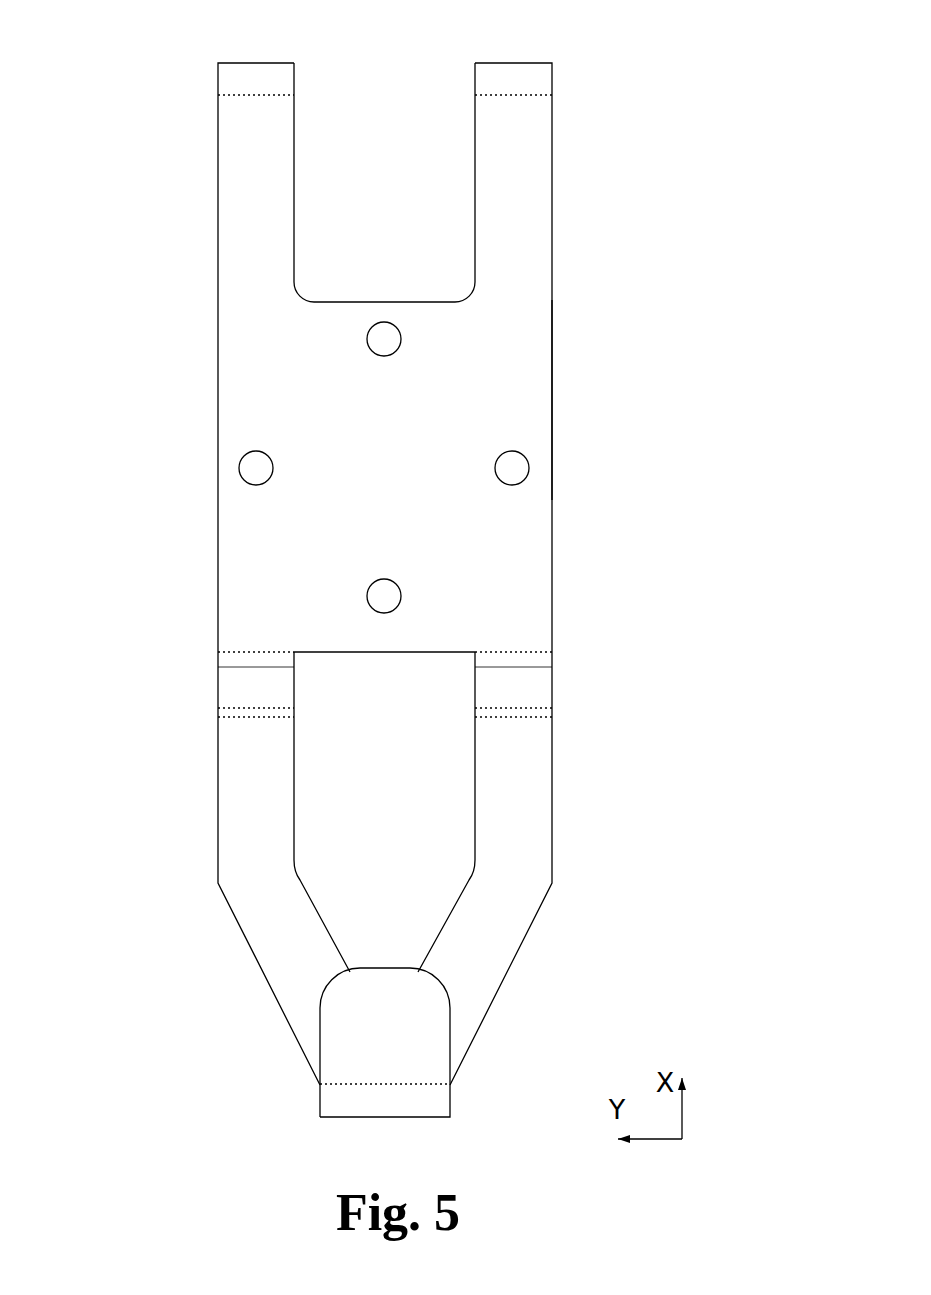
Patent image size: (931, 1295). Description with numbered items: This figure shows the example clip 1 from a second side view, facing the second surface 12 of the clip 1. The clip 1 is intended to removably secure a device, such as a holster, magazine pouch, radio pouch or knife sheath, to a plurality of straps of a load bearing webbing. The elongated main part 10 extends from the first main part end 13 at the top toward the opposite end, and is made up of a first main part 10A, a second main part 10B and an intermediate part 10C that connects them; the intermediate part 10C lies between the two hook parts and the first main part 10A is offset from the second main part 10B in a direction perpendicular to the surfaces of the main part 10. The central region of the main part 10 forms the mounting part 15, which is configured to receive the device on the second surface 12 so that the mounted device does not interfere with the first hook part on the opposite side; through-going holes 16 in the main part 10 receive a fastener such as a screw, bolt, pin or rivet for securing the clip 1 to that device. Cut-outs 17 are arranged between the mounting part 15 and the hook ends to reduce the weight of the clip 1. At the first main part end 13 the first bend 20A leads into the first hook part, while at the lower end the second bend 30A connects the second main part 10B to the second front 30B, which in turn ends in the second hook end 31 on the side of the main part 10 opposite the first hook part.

The clip 1 is at (676, 70).
The main part 10 is at (124, 638).
The first main part 10A is at (325, 357).
The second main part 10B is at (441, 901).
The intermediate part 10C is at (376, 685).
The second surface 12 is at (576, 400).
The first main part end 13 is at (348, 104).
The mounting part 15 is at (457, 562).
The through-going holes 16 is at (384, 366).
The cut-outs 17 is at (400, 187).
The first bend 20A is at (395, 167).
The second bend 30A is at (430, 1062).
The second front 30B is at (295, 1080).
The second hook end 31 is at (385, 958).